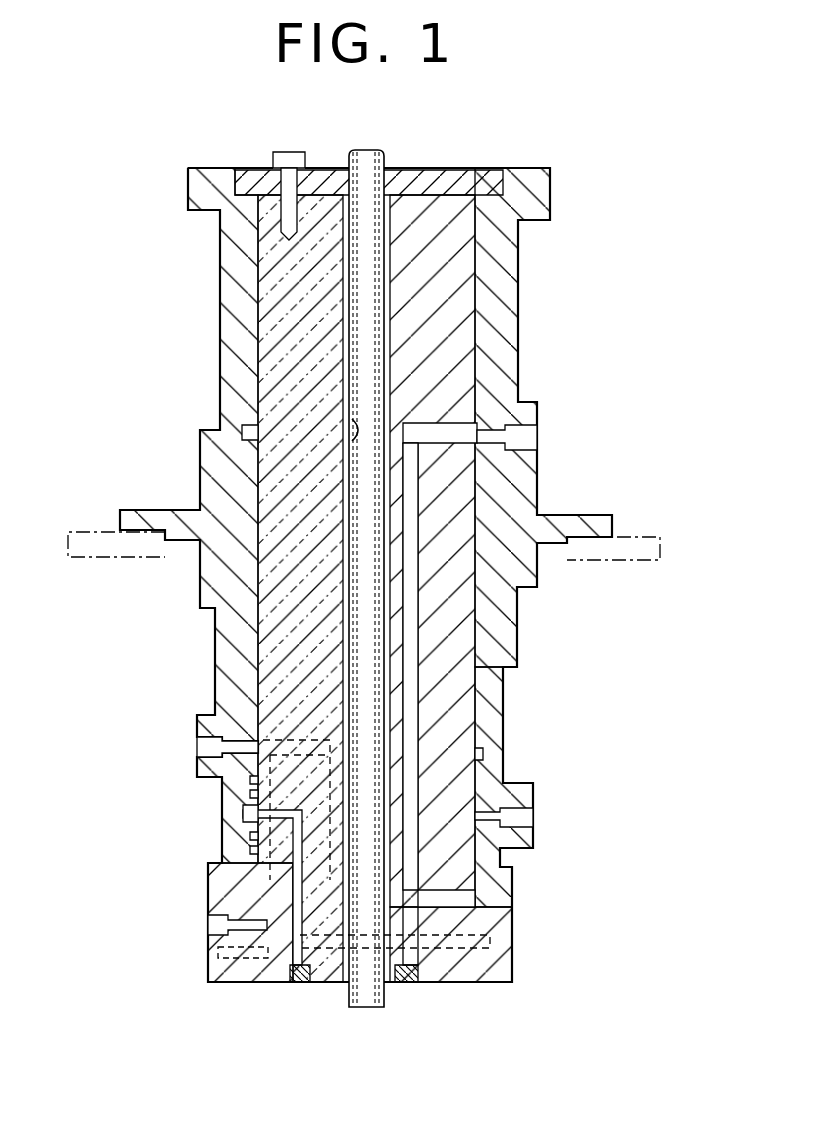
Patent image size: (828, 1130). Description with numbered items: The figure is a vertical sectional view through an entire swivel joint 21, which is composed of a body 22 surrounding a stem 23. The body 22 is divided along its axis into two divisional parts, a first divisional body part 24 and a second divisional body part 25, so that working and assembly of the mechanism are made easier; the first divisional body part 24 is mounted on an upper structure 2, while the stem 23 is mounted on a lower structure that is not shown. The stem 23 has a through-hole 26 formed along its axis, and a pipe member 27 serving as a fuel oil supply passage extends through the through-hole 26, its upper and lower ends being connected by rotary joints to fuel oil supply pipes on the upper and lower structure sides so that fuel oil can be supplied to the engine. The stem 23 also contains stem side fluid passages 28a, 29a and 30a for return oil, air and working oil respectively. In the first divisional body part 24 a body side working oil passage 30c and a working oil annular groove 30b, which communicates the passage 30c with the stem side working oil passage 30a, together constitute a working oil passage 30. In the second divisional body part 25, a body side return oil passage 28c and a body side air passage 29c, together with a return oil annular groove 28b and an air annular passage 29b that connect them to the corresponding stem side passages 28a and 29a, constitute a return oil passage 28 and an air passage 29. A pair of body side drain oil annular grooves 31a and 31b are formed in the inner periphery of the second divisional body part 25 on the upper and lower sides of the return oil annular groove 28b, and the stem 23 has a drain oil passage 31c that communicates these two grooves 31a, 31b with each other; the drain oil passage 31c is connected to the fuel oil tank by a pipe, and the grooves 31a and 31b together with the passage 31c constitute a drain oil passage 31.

The upper structure 2 is at (637, 530).
The swivel joint 21 is at (527, 330).
The body 22 is at (198, 449).
The stem 23 is at (268, 300).
The first divisional body part 24 is at (537, 477).
The second divisional body part 25 is at (503, 698).
The through-hole 26 is at (352, 436).
The pipe member 27 is at (386, 255).
The return oil passage 28 is at (277, 868).
The stem side return oil passage 28a is at (300, 962).
The return oil annular groove 28b is at (245, 815).
The body side return oil passage 28c is at (520, 820).
The air passage 29 is at (447, 962).
The stem side air passage 29a is at (292, 738).
The air annular passage 29b is at (483, 757).
The body side air passage 29c is at (200, 748).
The working oil passage 30 is at (442, 420).
The stem side working oil passage 30a is at (413, 570).
The working oil annular groove 30b is at (262, 428).
The body side working oil passage 30c is at (490, 434).
The drain oil passage 31 is at (243, 962).
The drain oil annular groove 31a is at (250, 780).
The drain oil annular groove 31b is at (248, 843).
The drain oil passage 31c is at (245, 913).